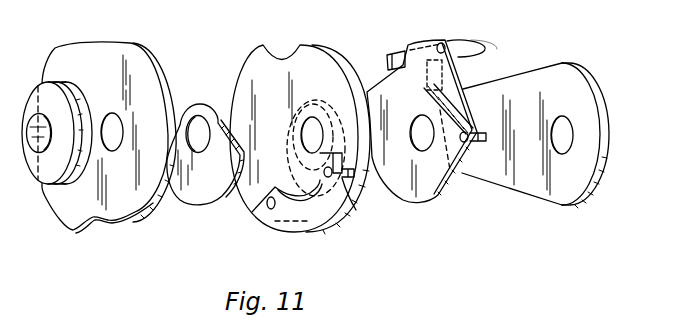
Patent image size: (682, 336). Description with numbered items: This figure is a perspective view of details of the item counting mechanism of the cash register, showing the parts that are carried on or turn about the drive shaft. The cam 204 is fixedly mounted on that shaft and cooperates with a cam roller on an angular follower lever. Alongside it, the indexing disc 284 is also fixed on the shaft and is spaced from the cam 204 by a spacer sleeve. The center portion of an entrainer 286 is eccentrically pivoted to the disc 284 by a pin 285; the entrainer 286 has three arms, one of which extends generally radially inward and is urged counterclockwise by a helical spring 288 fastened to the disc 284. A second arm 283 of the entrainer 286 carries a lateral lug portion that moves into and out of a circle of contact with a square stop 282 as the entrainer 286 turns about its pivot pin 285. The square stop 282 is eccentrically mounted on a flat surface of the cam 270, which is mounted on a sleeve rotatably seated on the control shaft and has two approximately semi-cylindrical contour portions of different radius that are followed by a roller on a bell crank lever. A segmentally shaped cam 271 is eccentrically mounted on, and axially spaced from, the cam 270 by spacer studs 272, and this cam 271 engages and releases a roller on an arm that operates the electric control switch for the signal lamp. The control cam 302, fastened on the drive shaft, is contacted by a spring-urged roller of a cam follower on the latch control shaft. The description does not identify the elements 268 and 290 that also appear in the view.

The cam 204 is at (600, 86).
The cam disc 268 is at (300, 139).
The cam 270 is at (357, 209).
The segmentally shaped cam 271 is at (262, 220).
The spacer studs 272 is at (274, 206).
The square stop 282 is at (362, 176).
The second arm 283 is at (393, 53).
The indexing disc 284 is at (453, 187).
The pin 285 is at (439, 43).
The entrainer 286 is at (461, 43).
The helical spring 288 is at (466, 77).
The ear 290 is at (488, 47).
The control cam 302 is at (195, 206).